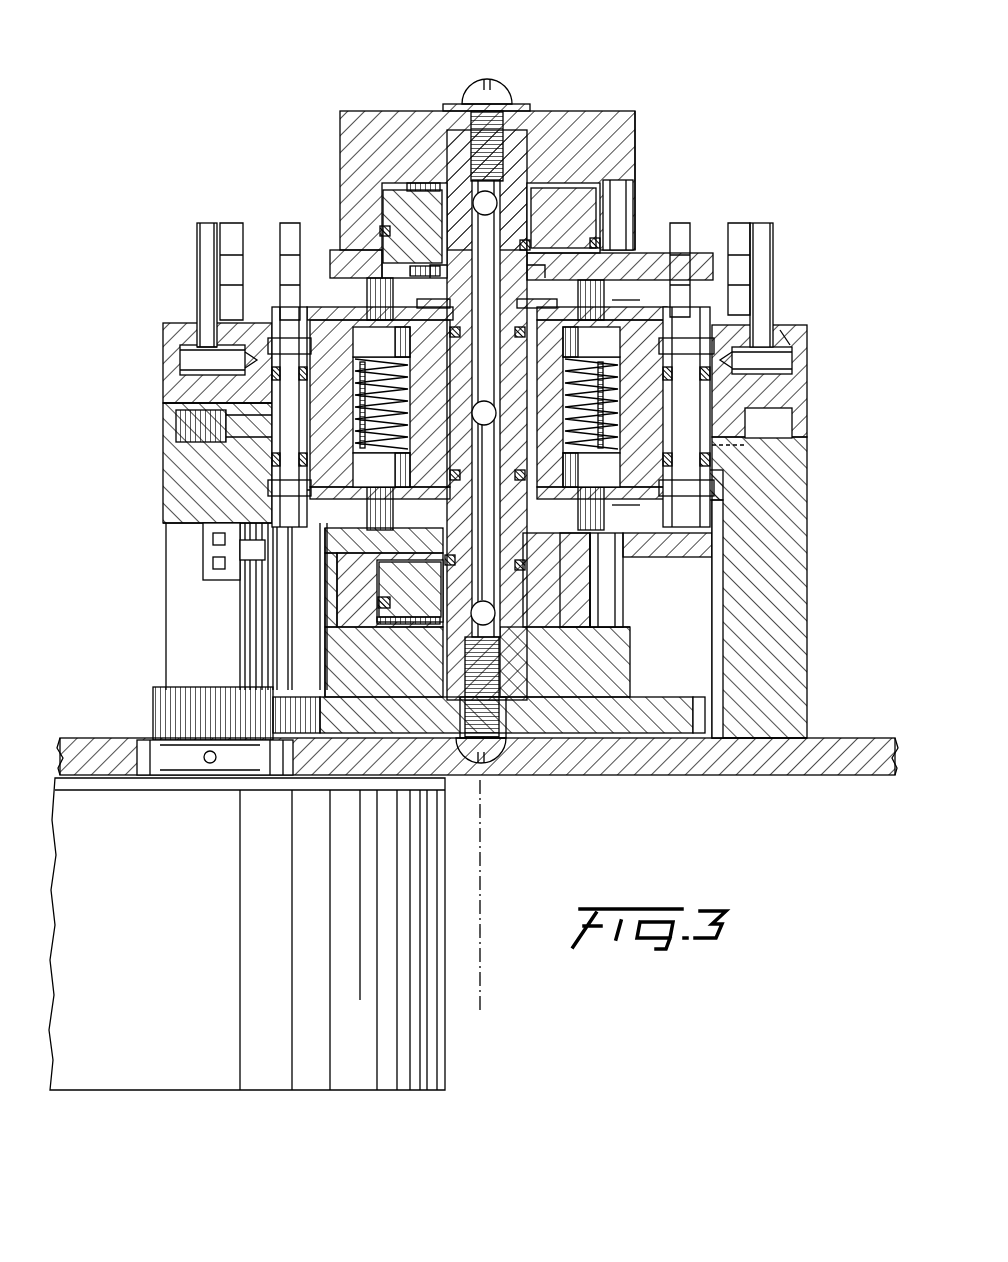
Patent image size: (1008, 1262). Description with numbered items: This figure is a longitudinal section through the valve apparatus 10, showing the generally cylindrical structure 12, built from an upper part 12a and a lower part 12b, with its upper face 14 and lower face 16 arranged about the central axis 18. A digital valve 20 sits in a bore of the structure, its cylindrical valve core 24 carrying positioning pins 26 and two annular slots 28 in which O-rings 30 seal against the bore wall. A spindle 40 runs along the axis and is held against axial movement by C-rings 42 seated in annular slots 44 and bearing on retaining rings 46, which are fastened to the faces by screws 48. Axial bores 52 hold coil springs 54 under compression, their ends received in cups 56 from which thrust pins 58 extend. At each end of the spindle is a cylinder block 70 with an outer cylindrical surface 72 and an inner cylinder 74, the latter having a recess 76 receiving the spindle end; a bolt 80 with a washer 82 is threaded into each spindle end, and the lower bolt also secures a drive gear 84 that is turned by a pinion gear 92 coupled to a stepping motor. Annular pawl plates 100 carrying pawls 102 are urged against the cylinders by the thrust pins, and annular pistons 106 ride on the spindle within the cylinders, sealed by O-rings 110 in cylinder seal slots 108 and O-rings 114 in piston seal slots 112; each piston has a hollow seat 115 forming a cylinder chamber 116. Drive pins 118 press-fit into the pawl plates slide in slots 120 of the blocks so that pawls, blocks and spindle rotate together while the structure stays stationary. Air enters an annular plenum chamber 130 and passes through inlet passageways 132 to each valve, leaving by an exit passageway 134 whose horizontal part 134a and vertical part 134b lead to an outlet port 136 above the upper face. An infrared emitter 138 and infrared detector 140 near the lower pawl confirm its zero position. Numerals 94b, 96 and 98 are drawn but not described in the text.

The valve apparatus 10 is at (712, 157).
The cylindrical structure 12 is at (788, 325).
The upper part 12a is at (165, 385).
The lower part 12b is at (165, 483).
The upper face 14 is at (200, 330).
The lower face 16 is at (168, 525).
The axis 18 is at (478, 860).
The digital valve 20 is at (693, 452).
The valve core 24 is at (760, 418).
The positioning pin 26 is at (282, 320).
The annular slot 28 is at (745, 490).
The O-ring 30 is at (262, 378).
The spindle 40 is at (465, 137).
The C-ring 42 is at (428, 267).
The annular slot 44 is at (537, 302).
The retaining ring 46 is at (310, 490).
The screw 48 is at (635, 312).
The axial bore 52 is at (365, 420).
The coil spring 54 is at (365, 385).
The cup 56 is at (355, 340).
The thrust pin 58 is at (388, 288).
The cylinder block 70 is at (610, 118).
The outer cylindrical surface 72 is at (637, 172).
The cylinder 74 is at (383, 218).
The recess 76 is at (550, 707).
The bolt 80 is at (500, 92).
The washer 82 is at (523, 104).
The drive gear 84 is at (300, 723).
The pinion gear 92 is at (158, 695).
The ball 94b is at (478, 200).
The shaft 96 is at (487, 415).
The bore 98 is at (487, 512).
The pawl plate 100 is at (362, 270).
The pawl 102 is at (645, 265).
The piston 106 is at (595, 578).
The cylinder seal slot 108 is at (390, 230).
The O-ring 110 is at (378, 232).
The piston seal slot 112 is at (586, 600).
The O-ring 114 is at (390, 600).
The hollow seat 115 is at (563, 218).
The cylinder chamber 116 is at (585, 165).
The drive pin 118 is at (640, 190).
The slot 120 is at (622, 620).
The plenum chamber 130 is at (182, 418).
The inlet passageway 132 is at (178, 430).
The exit passageway 134 is at (770, 353).
The horizontal part 134a is at (195, 335).
The vertical part 134b is at (185, 340).
The outlet port 136 is at (290, 228).
The infrared emitter 138 is at (205, 538).
The infrared detector 140 is at (205, 567).